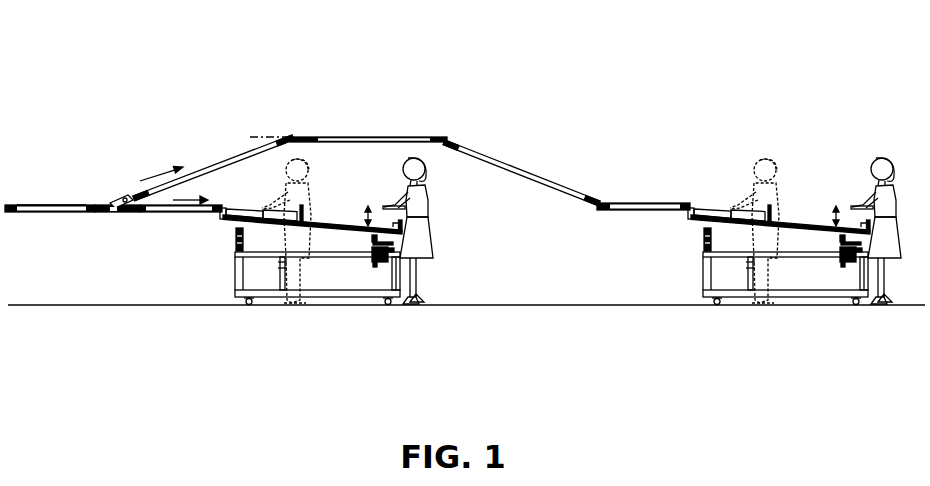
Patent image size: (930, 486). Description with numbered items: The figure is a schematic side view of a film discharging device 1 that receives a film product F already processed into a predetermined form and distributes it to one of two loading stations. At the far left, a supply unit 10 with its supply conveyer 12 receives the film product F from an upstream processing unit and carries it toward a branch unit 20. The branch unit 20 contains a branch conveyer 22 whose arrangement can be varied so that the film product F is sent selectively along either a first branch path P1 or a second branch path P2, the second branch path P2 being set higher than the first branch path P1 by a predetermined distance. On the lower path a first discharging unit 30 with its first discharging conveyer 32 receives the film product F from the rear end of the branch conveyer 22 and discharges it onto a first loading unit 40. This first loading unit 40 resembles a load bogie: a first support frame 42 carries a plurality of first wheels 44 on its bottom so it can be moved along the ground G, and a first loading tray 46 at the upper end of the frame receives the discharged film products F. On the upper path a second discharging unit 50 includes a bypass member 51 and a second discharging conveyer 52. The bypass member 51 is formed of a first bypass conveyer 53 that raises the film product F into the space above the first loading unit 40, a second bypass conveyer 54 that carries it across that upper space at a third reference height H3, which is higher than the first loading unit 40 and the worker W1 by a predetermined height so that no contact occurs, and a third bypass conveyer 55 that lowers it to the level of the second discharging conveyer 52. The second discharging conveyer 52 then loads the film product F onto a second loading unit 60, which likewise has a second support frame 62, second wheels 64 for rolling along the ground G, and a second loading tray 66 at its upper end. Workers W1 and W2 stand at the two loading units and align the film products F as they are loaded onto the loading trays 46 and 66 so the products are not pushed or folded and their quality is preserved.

The film discharging device 1 is at (85, 77).
The supply unit 10 is at (50, 201).
The supply conveyer 12 is at (55, 213).
The branch unit 20 is at (114, 201).
The branch conveyer 22 is at (115, 213).
The first discharging unit 30 is at (181, 246).
The first discharging conveyer 32 is at (167, 213).
The first loading unit 40 is at (311, 258).
The first support frame 42 is at (332, 298).
The first wheels 44 is at (388, 306).
The first loading tray 46 is at (353, 225).
The second discharging unit 50 is at (411, 114).
The bypass member 51 is at (366, 112).
The second discharging conveyer 52 is at (645, 203).
The first bypass conveyer 53 is at (202, 168).
The second bypass conveyer 54 is at (376, 137).
The third bypass conveyer 55 is at (505, 158).
The second loading unit 60 is at (794, 232).
The second support frame 62 is at (800, 298).
The second wheels 64 is at (853, 306).
The second loading tray 66 is at (817, 225).
The film product F is at (26, 203).
The ground G is at (573, 316).
The third reference height H3 is at (258, 135).
The first branch path P1 is at (198, 191).
The second branch path P2 is at (161, 169).
The worker W1 is at (440, 232).
The worker W2 is at (765, 157).